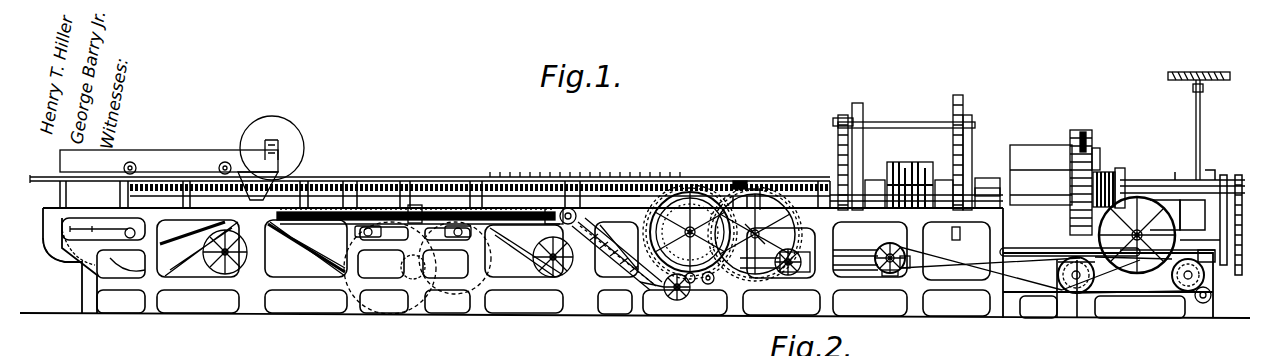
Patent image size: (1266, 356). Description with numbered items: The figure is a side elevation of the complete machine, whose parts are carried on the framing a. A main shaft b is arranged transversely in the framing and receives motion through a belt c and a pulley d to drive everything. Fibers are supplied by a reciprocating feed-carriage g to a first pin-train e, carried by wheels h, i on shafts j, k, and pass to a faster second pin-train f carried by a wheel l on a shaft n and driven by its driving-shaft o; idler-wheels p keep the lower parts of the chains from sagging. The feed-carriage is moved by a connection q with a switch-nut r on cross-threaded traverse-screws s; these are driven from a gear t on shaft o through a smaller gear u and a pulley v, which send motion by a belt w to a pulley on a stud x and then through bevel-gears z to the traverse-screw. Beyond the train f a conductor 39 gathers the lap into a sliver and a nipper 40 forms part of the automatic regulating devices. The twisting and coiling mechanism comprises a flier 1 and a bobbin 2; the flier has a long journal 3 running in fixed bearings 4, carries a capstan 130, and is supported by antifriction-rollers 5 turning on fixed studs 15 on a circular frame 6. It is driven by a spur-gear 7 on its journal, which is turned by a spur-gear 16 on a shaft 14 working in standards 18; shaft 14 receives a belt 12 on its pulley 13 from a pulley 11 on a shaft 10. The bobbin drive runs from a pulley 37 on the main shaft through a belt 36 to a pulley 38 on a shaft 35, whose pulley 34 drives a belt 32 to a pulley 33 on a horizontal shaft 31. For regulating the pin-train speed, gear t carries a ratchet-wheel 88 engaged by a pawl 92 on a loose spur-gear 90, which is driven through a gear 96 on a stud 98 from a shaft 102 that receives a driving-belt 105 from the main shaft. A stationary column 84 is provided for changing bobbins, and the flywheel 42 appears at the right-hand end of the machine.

The reciprocating feed-carriage g is at (182, 158).
The first pin-train e is at (184, 168).
The connection q is at (360, 197).
The switch-nut r is at (418, 207).
The cross-threaded traverse-screws s is at (440, 217).
The shaft k is at (368, 237).
The wheel l is at (487, 237).
The shaft n is at (430, 270).
The framing a is at (78, 228).
The shaft j is at (133, 233).
The wheel h is at (158, 247).
The idler-wheels p is at (207, 273).
The wheel i is at (320, 273).
The stud x is at (573, 210).
The bevel-gears z is at (560, 208).
The second pin-train f is at (620, 173).
The belt w is at (617, 254).
The driving-shaft o is at (697, 217).
The spur-gear 90 is at (678, 217).
The ratchet-wheel 88 is at (672, 213).
The pawl 92 is at (723, 203).
The conductor 39 is at (742, 183).
The nipper 40 is at (768, 186).
The stud 98 is at (761, 232).
The pulley 11 is at (796, 252).
The shaft 102 is at (793, 272).
The gear 96 is at (753, 273).
The gear u is at (677, 292).
The pulley v is at (690, 283).
The gear t is at (708, 284).
The standards 18 is at (838, 150).
The belt 12 is at (861, 162).
The pulley 13 is at (862, 108).
The shaft 14 is at (906, 115).
The spur-gear 16 is at (975, 106).
The belt c is at (883, 212).
The capstan 130 is at (932, 95).
The fixed bearings 4 is at (1027, 172).
The journal 3 is at (985, 188).
The pulley d is at (896, 252).
The driving-belt 105 is at (858, 262).
The shaft 10 is at (870, 267).
The main shaft b is at (893, 270).
The pulley 37 is at (905, 270).
The belt 36 is at (1020, 268).
The spur-gear 7 is at (962, 238).
The flier 1 is at (1041, 175).
The circular frame or arch 6 is at (1070, 140).
The antifriction-rollers 5 is at (1085, 140).
The fixed studs 15 is at (1100, 158).
The bobbin 2 is at (1100, 180).
The flywheel 42 is at (1137, 235).
The stationary column 84 is at (1199, 126).
The shaft 35 is at (1062, 290).
The pulley 34 is at (1072, 278).
The pulley 38 is at (1078, 293).
The pulley 33 is at (1190, 283).
The belt 32 is at (1167, 300).
The horizontal shaft 31 is at (1200, 278).